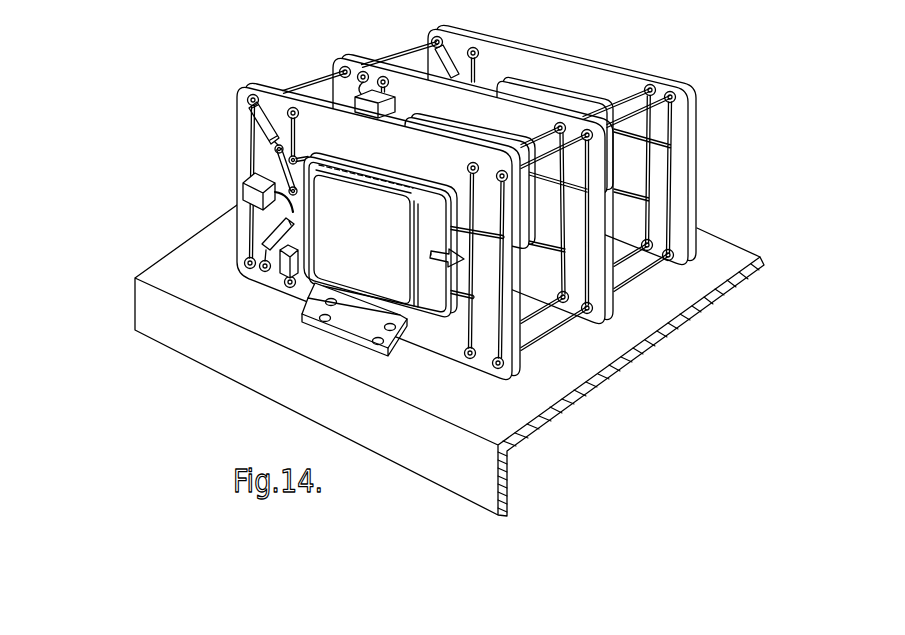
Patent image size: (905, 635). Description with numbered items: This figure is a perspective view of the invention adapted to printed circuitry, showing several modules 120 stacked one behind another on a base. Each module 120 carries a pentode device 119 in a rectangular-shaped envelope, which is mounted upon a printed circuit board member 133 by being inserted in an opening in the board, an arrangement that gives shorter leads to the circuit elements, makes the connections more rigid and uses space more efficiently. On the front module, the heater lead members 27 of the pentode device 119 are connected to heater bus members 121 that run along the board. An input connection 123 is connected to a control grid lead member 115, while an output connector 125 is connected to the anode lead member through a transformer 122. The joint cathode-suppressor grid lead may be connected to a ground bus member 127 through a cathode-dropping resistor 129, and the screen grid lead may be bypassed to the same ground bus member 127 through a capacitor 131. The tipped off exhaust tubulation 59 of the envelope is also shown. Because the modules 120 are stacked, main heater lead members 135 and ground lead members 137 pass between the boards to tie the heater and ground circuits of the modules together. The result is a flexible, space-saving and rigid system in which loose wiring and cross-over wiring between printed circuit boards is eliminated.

The module 120 is at (238, 104).
The cathode-dropping resistor 129 is at (263, 105).
The ground lead member 137 is at (320, 80).
The printed circuit board member 133 is at (488, 43).
The main heater lead member 135 is at (548, 137).
The input connection 123 is at (298, 118).
The control grid lead member 115 is at (297, 155).
The pentode device 119 is at (413, 175).
The ground bus member 127 is at (250, 151).
The capacitor 131 is at (248, 188).
The transformer 122 is at (283, 266).
The output connector 125 is at (291, 286).
The heater lead member 27 is at (464, 229).
The tipped off exhaust tubulation 59 is at (461, 263).
The heater bus member 121 is at (497, 334).